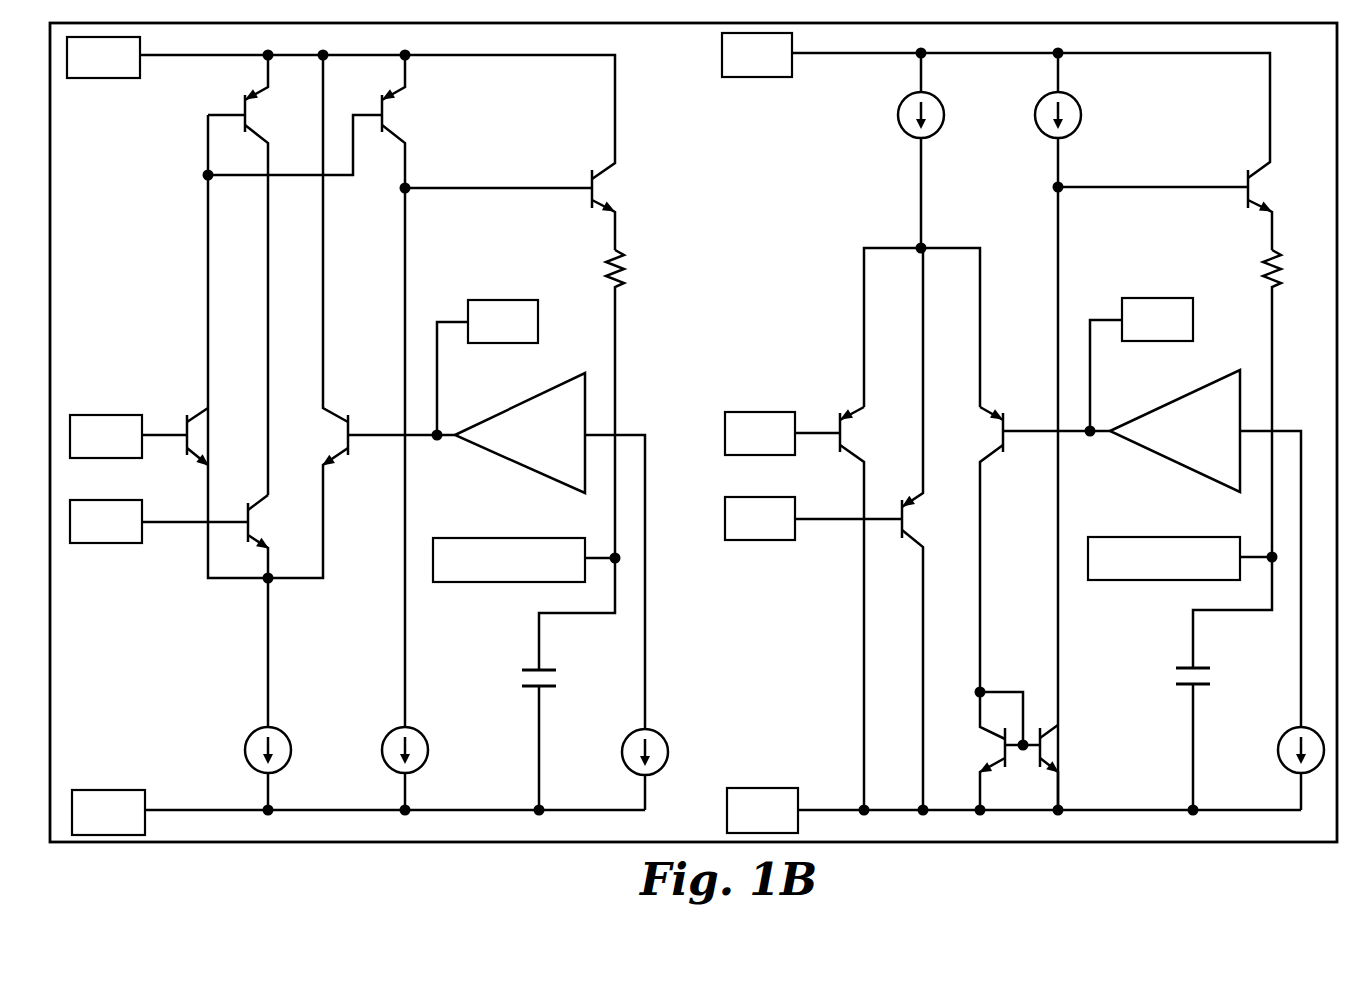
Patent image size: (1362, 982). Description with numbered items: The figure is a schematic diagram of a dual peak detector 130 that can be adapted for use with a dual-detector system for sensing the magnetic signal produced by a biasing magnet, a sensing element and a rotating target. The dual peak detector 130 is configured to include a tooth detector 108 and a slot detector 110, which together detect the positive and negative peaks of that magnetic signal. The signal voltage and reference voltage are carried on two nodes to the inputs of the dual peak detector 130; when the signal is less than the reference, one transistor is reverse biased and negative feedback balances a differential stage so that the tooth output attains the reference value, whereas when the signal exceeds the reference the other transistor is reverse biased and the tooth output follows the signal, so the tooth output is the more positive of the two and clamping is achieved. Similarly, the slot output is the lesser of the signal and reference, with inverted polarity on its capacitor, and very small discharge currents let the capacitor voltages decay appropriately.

The tooth detector 108 is at (632, 110).
The slot detector 110 is at (741, 177).
The dual peak detector 130 is at (751, 279).